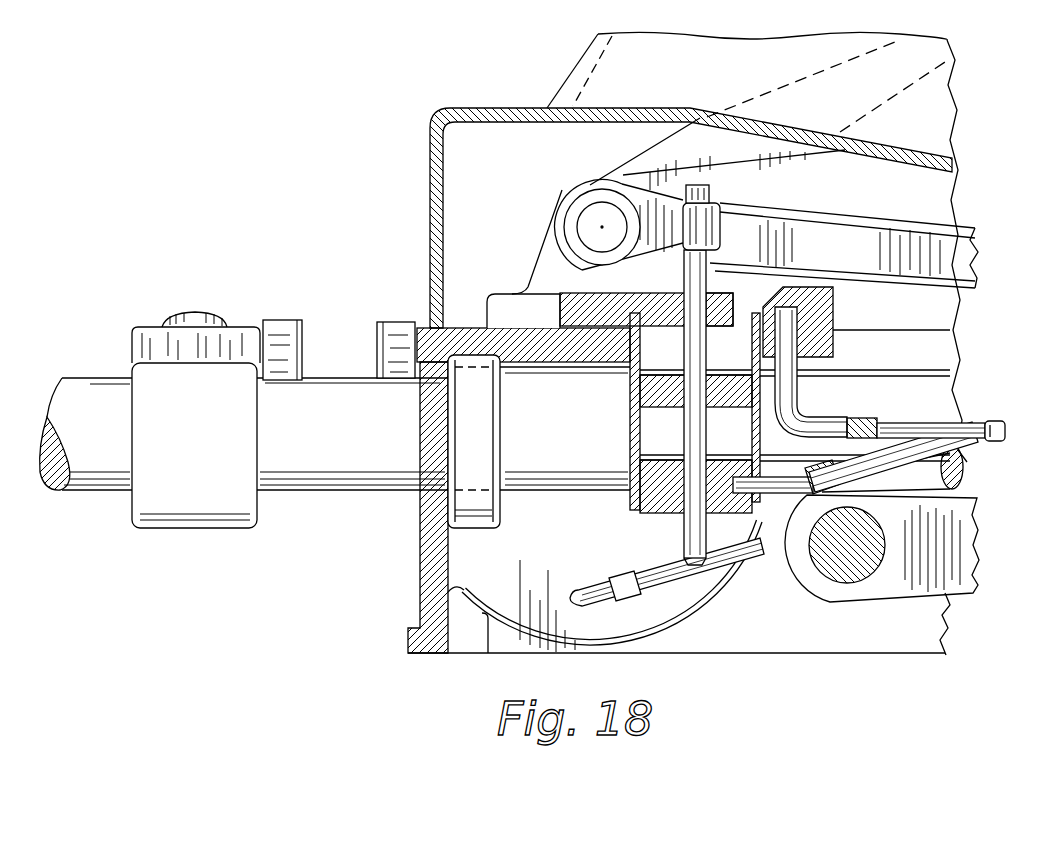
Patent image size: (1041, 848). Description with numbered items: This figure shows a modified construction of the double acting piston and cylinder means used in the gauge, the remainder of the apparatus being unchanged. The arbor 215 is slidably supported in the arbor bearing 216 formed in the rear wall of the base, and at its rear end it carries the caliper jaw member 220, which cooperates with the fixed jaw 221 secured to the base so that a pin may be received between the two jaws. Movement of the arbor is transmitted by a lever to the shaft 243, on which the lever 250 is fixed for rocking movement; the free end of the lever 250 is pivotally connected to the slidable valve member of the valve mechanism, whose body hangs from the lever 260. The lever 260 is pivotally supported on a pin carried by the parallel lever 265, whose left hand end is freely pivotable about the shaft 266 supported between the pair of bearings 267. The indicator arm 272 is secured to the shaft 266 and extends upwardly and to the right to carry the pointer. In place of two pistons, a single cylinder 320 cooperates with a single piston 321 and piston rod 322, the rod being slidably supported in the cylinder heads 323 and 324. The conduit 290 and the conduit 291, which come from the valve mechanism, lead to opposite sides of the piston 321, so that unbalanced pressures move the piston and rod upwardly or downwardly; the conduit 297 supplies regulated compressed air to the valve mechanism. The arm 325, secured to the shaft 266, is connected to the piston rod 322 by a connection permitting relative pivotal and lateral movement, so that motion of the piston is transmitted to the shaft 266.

The arbor 215 is at (368, 492).
The arbor bearing 216 is at (470, 533).
The caliper jaw member 220 is at (283, 320).
The fixed jaw 221 is at (383, 322).
The shaft 243 is at (850, 578).
The lever 250 is at (894, 575).
The lever 260 is at (863, 227).
The lever 265 is at (807, 207).
The shaft 266 is at (588, 216).
The bearings 267 is at (598, 180).
The indicator arm 272 is at (686, 185).
The conduit 290 is at (975, 475).
The conduit 291 is at (890, 423).
The conduit 297 is at (753, 560).
The cylinder 320 is at (628, 408).
The piston 321 is at (660, 375).
The piston rod 322 is at (708, 327).
The cylinder head 323 is at (640, 513).
The cylinder head 324 is at (660, 297).
The arm 325 is at (578, 240).